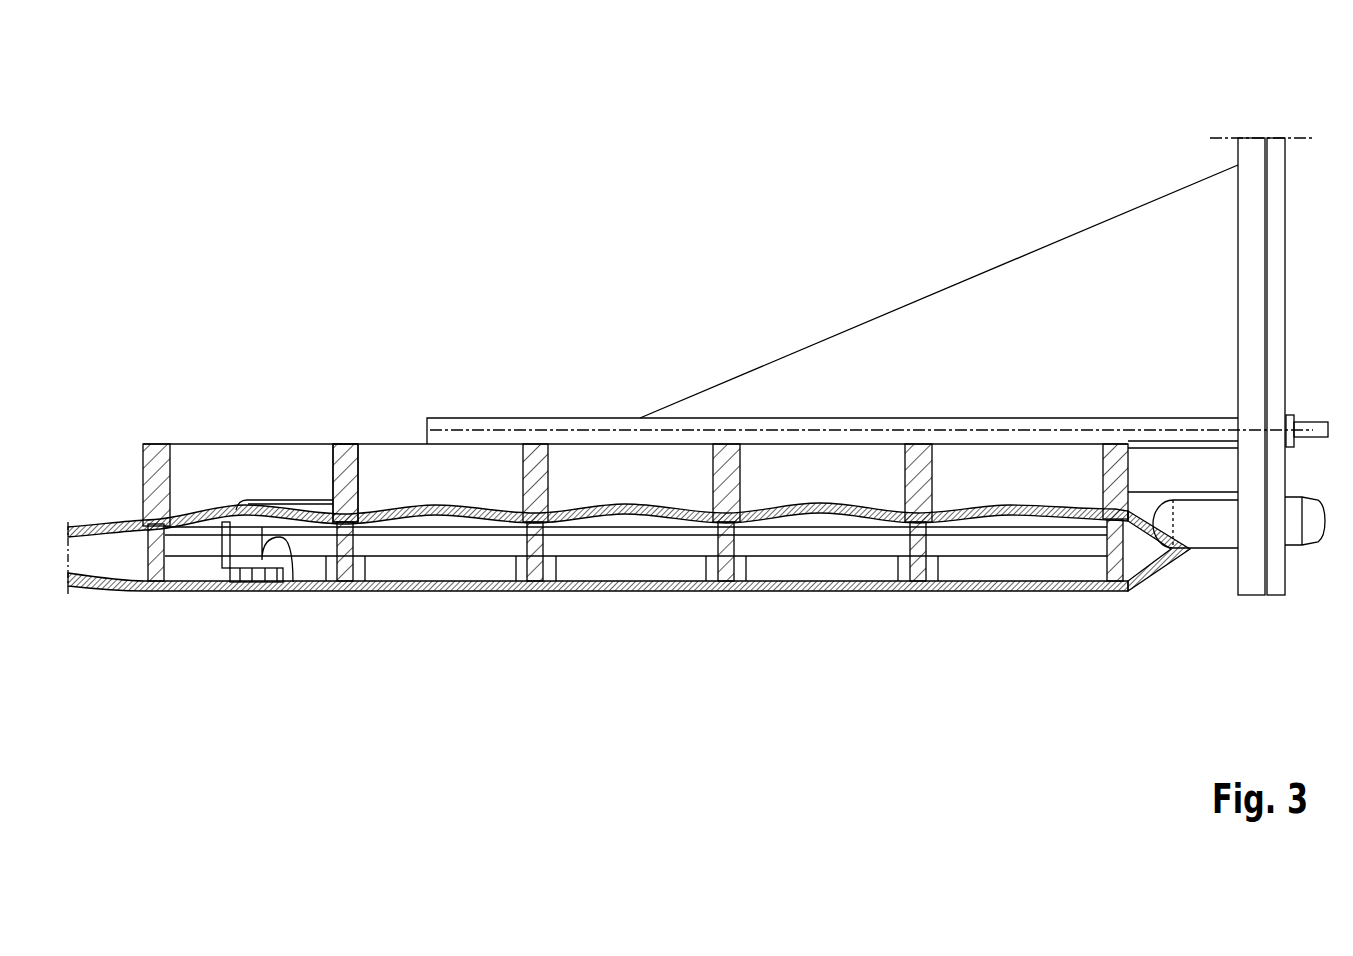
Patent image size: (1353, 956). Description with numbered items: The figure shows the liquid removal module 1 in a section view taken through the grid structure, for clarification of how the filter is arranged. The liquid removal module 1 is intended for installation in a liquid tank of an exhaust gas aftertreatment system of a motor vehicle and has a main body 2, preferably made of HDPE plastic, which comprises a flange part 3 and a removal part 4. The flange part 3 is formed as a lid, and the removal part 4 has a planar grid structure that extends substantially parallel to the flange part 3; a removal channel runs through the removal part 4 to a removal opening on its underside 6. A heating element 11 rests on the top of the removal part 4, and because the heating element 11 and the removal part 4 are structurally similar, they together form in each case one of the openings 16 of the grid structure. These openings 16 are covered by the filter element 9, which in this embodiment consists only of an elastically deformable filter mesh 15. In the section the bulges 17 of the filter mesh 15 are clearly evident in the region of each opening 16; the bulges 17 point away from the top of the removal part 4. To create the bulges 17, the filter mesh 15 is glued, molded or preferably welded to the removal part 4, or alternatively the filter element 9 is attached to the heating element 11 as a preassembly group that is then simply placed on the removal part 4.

The liquid removal module 1 is at (372, 154).
The main body 2 is at (1236, 123).
The flange part 3 is at (1255, 262).
The removal part 4 is at (535, 575).
The underside 6 is at (341, 592).
The filter element 9 is at (315, 524).
The heating element 11 is at (342, 462).
The filter mesh 15 is at (1058, 592).
The openings 16 is at (331, 468).
The bulges 17 is at (214, 522).